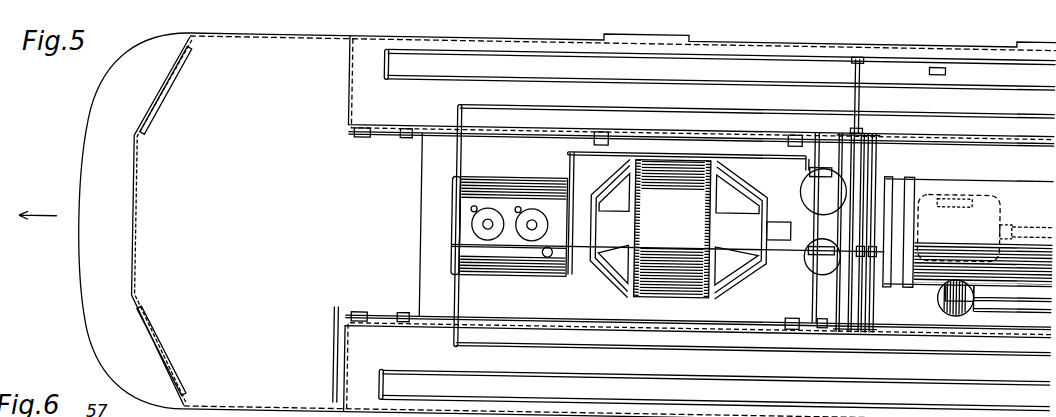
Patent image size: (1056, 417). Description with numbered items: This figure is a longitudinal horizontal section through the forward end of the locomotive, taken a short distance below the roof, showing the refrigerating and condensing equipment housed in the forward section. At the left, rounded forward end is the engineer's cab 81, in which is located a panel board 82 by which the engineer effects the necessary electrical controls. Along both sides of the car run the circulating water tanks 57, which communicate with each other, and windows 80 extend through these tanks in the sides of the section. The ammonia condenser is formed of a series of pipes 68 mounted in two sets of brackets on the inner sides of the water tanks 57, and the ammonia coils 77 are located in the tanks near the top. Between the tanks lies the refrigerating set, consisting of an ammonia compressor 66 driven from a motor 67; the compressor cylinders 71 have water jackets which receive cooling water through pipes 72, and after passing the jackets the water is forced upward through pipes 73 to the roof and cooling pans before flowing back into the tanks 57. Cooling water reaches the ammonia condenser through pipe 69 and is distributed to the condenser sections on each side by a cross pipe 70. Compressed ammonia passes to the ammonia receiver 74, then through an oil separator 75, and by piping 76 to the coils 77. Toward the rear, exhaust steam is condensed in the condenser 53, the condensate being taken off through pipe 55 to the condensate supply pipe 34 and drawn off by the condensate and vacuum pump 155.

The condensate supply pipe 34 is at (1015, 300).
The condenser 53 is at (989, 175).
The pipe 55 is at (950, 298).
The water tanks 57 is at (352, 92).
The ammonia compressor 66 is at (516, 271).
The motor 67 is at (691, 229).
The pipes 68 is at (396, 134).
The pipe 69 is at (894, 229).
The cross pipe 70 is at (879, 154).
The ammonia compressor cylinders 71 is at (526, 223).
The pipes 72 is at (457, 239).
The pipes 73 is at (480, 204).
The ammonia receiver 74 is at (808, 261).
The oil separator 75 is at (803, 180).
The piping 76 is at (857, 290).
The coils 77 is at (781, 52).
The windows 80 is at (607, 61).
The engineer's cab 81 is at (566, 221).
The panel board 82 is at (337, 327).
The condensate and vacuum pump 155 is at (1003, 208).